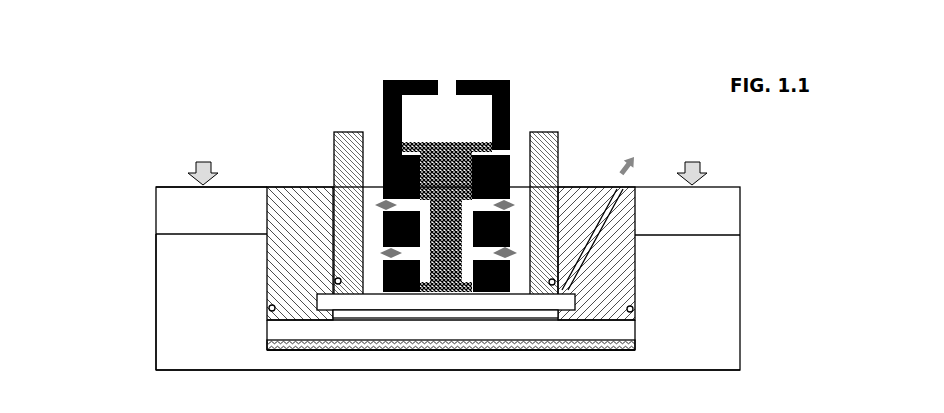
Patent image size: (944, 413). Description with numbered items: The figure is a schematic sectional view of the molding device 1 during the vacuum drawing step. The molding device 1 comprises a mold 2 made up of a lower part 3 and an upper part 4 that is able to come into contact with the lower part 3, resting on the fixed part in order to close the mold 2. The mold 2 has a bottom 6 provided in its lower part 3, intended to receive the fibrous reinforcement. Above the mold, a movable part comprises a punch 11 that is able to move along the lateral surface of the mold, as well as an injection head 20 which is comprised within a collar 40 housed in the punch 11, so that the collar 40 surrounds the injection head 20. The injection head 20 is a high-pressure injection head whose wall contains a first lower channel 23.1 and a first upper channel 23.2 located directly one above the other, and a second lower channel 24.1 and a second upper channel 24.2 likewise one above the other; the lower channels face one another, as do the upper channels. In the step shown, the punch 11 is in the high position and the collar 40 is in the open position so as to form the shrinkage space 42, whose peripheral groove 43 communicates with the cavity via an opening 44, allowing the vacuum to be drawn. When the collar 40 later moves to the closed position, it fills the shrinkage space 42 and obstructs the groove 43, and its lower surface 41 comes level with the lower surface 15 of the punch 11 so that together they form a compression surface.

The molding device 1 is at (309, 81).
The mold 2 is at (141, 267).
The lower part 3 is at (168, 314).
The upper part 4 is at (170, 197).
The bottom 6 is at (635, 352).
The punch 11 is at (623, 235).
The lower surface of the punch 15 is at (299, 326).
The injection head 20 is at (517, 89).
The first lower channel 23.1 is at (514, 251).
The first upper channel 23.2 is at (512, 201).
The second lower channel 24.1 is at (385, 253).
The second upper channel 24.2 is at (378, 202).
The collar 40 is at (548, 247).
The lower surface of the collar 41 is at (488, 295).
The shrinkage space 42 is at (269, 309).
The peripheral groove 43 is at (377, 302).
The opening 44 is at (456, 324).